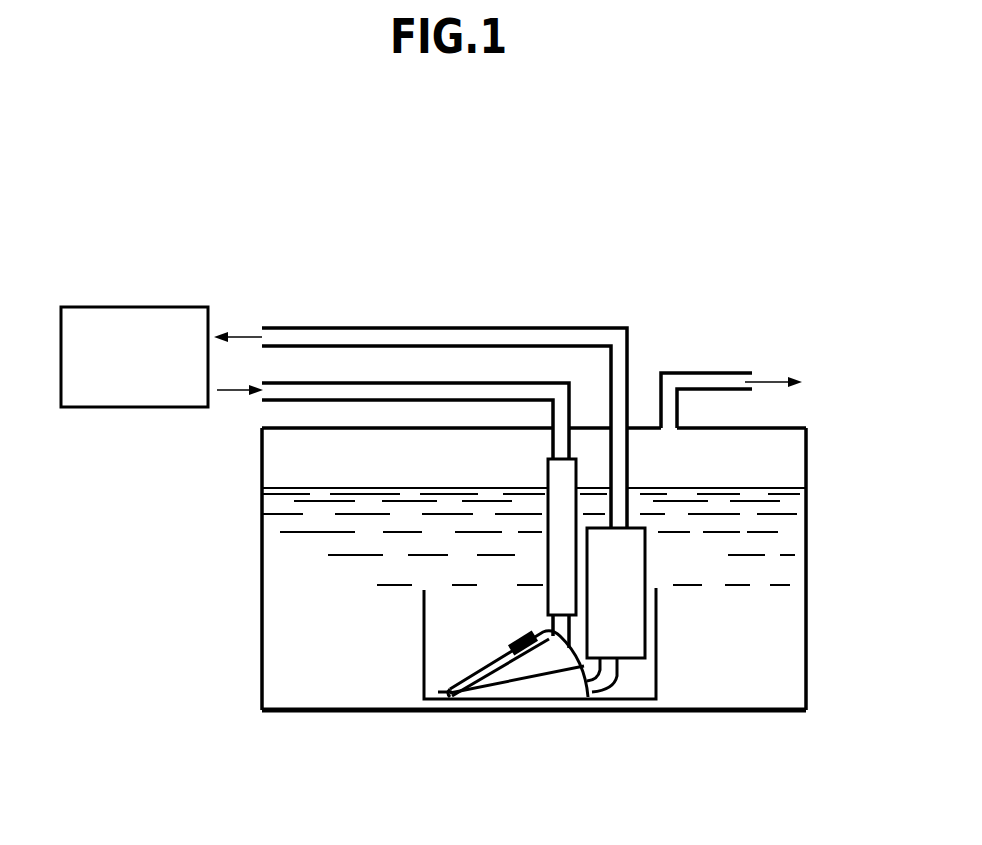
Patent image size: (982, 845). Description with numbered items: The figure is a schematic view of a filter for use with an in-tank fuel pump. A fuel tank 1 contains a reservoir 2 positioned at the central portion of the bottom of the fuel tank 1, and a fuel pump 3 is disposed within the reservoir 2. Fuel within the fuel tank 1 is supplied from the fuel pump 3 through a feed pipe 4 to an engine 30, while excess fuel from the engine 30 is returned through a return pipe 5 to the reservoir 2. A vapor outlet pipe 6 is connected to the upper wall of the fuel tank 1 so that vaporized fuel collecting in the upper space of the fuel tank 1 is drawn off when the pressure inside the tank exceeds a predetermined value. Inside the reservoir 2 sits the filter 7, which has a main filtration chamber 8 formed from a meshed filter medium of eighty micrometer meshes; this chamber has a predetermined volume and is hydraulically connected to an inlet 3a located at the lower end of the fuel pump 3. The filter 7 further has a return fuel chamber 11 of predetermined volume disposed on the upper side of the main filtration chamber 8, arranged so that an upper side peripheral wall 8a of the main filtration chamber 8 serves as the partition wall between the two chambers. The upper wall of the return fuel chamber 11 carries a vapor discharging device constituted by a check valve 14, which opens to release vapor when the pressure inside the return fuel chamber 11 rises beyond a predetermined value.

The fuel tank 1 is at (806, 457).
The reservoir 2 is at (424, 638).
The fuel pump 3 is at (645, 560).
The inlet 3a is at (620, 672).
The feed pipe 4 is at (556, 328).
The return pipe 5 is at (452, 383).
The vapor outlet pipe 6 is at (702, 373).
The filter 7 is at (533, 701).
The main filtration chamber 8 is at (570, 690).
The upper side peripheral wall 8a is at (500, 678).
The return fuel chamber 11 is at (500, 668).
The check valve 14 is at (520, 638).
The engine 30 is at (170, 307).